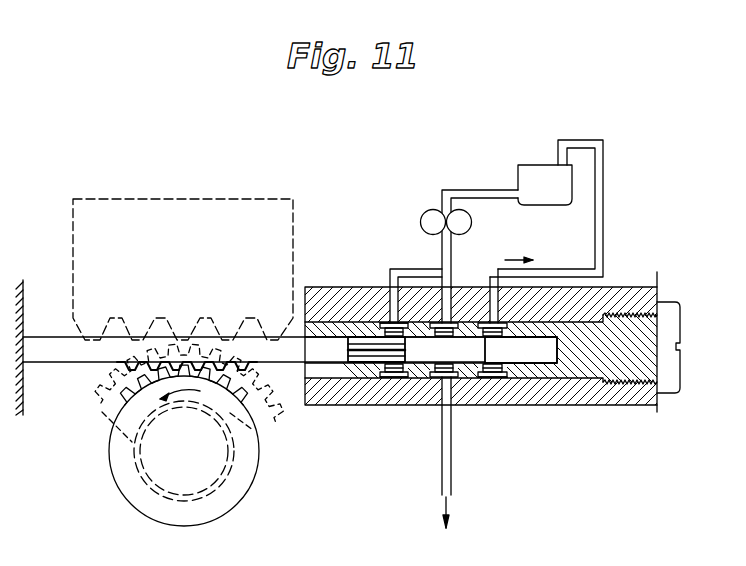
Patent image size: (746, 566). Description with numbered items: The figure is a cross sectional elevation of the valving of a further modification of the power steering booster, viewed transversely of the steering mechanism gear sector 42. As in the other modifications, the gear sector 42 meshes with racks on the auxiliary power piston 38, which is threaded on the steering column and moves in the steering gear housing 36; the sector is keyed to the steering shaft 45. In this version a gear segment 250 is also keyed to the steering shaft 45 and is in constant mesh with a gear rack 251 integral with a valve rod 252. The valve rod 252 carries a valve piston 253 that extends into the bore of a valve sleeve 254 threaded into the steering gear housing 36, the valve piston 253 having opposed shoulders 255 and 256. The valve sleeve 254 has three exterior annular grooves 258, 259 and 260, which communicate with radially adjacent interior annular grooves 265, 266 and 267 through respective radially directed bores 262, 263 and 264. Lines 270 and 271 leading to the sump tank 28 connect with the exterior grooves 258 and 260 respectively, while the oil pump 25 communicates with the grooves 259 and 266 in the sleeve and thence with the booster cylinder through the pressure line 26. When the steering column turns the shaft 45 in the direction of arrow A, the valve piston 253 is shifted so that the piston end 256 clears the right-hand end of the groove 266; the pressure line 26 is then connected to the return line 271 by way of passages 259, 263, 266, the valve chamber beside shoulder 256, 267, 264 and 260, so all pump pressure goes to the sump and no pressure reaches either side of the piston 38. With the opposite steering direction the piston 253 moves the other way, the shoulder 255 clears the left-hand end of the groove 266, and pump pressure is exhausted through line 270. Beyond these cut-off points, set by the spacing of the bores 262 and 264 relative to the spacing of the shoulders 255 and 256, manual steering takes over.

The oil pump 25 is at (428, 214).
The pressure line 26 is at (447, 245).
The sump tank 28 is at (535, 182).
The steering gear housing 36 is at (635, 297).
The auxiliary power piston 38 is at (82, 222).
The gear sector 42 is at (103, 408).
The steering shaft 45 is at (138, 445).
The gear segment 250 is at (233, 415).
The gear rack 251 is at (238, 360).
The valve rod 252 is at (336, 385).
The valve piston 253 is at (420, 365).
The valve sleeve 254 is at (592, 358).
The shoulder 255 is at (406, 378).
The shoulder 256 is at (488, 352).
The exterior annular groove 258 is at (396, 325).
The exterior annular groove 259 is at (460, 287).
The exterior annular groove 260 is at (525, 307).
The radial bore 262 is at (386, 381).
The radial bore 263 is at (454, 378).
The radial bore 264 is at (500, 380).
The interior annular groove 265 is at (382, 325).
The interior annular groove 266 is at (438, 415).
The interior annular groove 267 is at (485, 380).
The line 270 is at (413, 273).
The line 271 is at (491, 278).